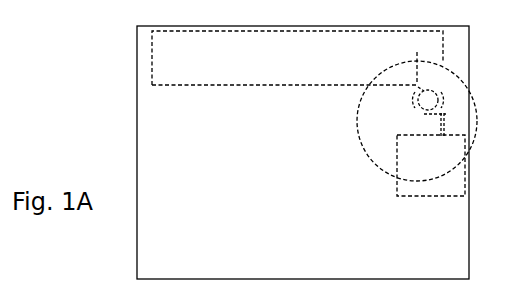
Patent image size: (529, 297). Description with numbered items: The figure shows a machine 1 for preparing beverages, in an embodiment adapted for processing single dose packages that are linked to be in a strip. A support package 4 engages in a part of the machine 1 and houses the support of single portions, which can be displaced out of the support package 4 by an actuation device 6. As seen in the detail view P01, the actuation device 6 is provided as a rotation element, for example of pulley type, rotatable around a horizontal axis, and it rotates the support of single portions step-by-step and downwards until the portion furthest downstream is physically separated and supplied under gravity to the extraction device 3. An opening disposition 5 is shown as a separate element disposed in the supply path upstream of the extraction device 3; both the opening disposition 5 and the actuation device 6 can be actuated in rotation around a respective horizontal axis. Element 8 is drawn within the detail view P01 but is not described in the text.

The machine 1 is at (125, 44).
The support package 4 is at (401, 37).
The detail view P01 is at (437, 121).
The via / hole 8 is at (430, 90).
The actuation device 6 is at (416, 103).
The opening disposition 5 is at (453, 124).
The extraction device 3 is at (397, 175).